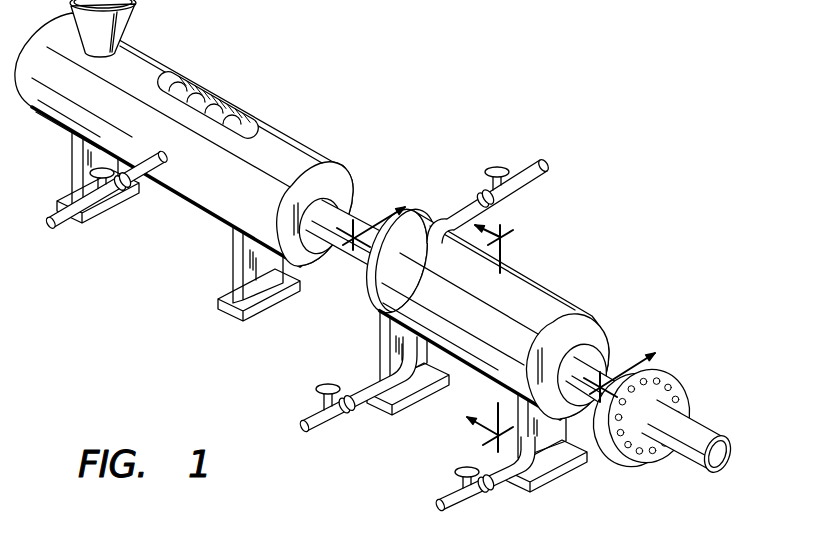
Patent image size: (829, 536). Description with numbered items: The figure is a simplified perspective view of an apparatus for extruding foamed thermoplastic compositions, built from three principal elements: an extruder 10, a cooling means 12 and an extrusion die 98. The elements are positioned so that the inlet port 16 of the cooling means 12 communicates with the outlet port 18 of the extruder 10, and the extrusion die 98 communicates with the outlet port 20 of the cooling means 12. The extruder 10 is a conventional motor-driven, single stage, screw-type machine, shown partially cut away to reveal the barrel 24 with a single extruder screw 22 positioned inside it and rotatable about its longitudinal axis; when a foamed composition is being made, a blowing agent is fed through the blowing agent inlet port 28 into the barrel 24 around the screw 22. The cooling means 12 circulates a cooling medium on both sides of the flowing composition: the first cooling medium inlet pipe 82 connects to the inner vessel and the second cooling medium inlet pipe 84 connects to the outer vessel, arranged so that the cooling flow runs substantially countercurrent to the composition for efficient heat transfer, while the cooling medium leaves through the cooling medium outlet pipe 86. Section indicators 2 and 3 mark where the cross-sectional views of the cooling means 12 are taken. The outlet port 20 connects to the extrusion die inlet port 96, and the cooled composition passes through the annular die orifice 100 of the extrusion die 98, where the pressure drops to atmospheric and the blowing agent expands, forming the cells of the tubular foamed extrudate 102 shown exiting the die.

The extruder 10 is at (270, 72).
The cooling means 12 is at (560, 281).
The inlet port 16 is at (358, 268).
The outlet port 18 is at (348, 203).
The outlet port 20 is at (602, 357).
The extruder screw 22 is at (196, 100).
The barrel 24 is at (240, 116).
The blowing agent inlet port 28 is at (158, 168).
The first cooling medium inlet pipe 82 is at (365, 383).
The second cooling medium inlet pipe 84 is at (497, 477).
The cooling medium outlet pipe 86 is at (458, 212).
The extrusion die inlet port 96 is at (598, 410).
The extrusion die 98 is at (618, 460).
The die orifice 100 is at (686, 407).
The extrudate 102 is at (685, 440).
The section line 2- 2 is at (507, 295).
The section line 3- 3 is at (483, 331).